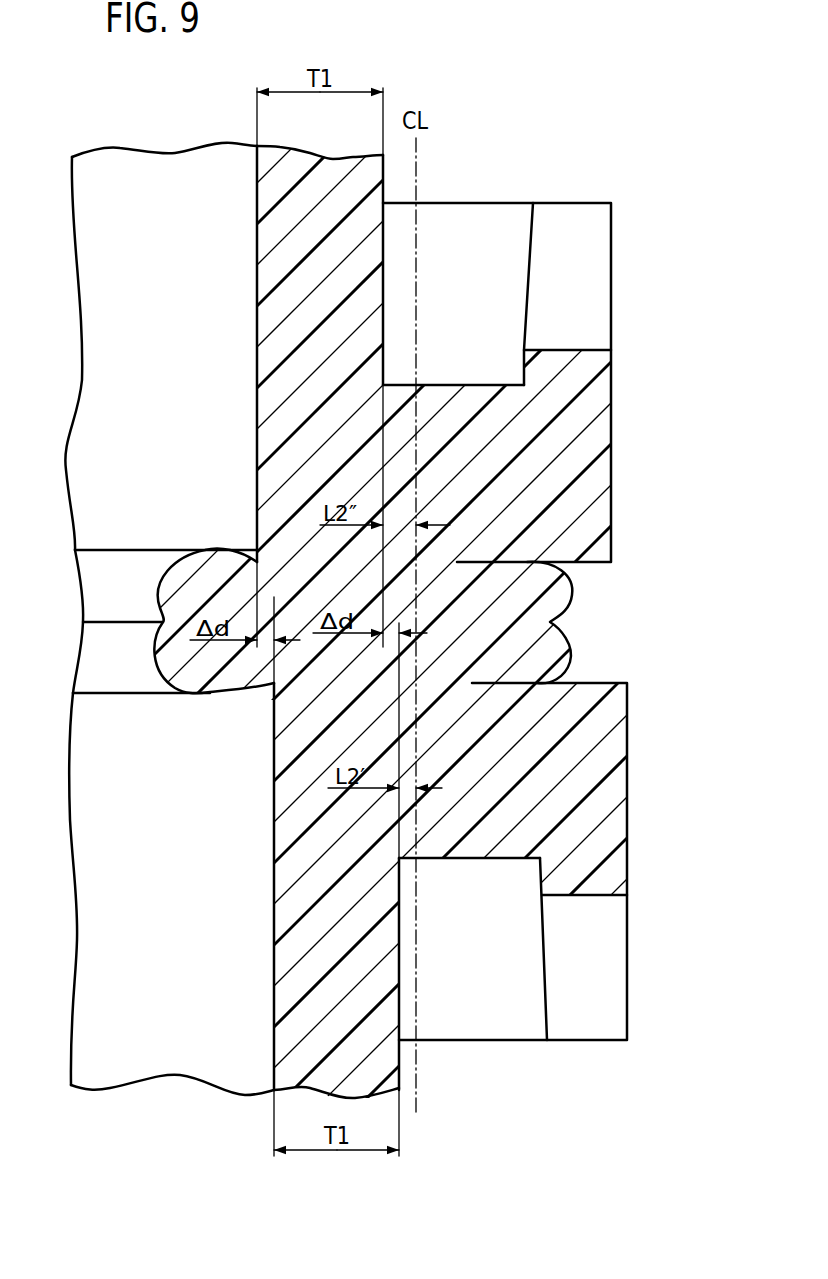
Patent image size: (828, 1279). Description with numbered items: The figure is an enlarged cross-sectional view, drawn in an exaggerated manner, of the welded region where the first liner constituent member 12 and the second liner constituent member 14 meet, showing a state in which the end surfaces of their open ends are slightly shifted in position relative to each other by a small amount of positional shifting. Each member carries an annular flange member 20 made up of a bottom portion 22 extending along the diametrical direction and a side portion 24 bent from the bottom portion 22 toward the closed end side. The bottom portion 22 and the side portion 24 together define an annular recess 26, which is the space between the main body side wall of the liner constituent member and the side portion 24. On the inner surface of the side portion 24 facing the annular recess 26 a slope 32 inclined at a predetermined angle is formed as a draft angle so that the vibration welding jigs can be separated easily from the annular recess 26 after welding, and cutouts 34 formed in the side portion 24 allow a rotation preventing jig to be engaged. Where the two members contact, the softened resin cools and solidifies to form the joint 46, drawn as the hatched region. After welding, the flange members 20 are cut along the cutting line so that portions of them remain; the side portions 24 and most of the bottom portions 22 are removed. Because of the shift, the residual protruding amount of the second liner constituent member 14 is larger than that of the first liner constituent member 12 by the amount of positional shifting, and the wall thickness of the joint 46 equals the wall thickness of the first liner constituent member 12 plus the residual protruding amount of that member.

The first liner constituent member 12 is at (106, 868).
The second liner constituent member 14 is at (108, 305).
The flange member 20 is at (667, 330).
The bottom portion 22 is at (597, 385).
The side portion 24 is at (597, 335).
The annular recess 26 is at (473, 383).
The slope 32 is at (530, 247).
The cutout 34 is at (570, 215).
The joint 46 is at (210, 575).